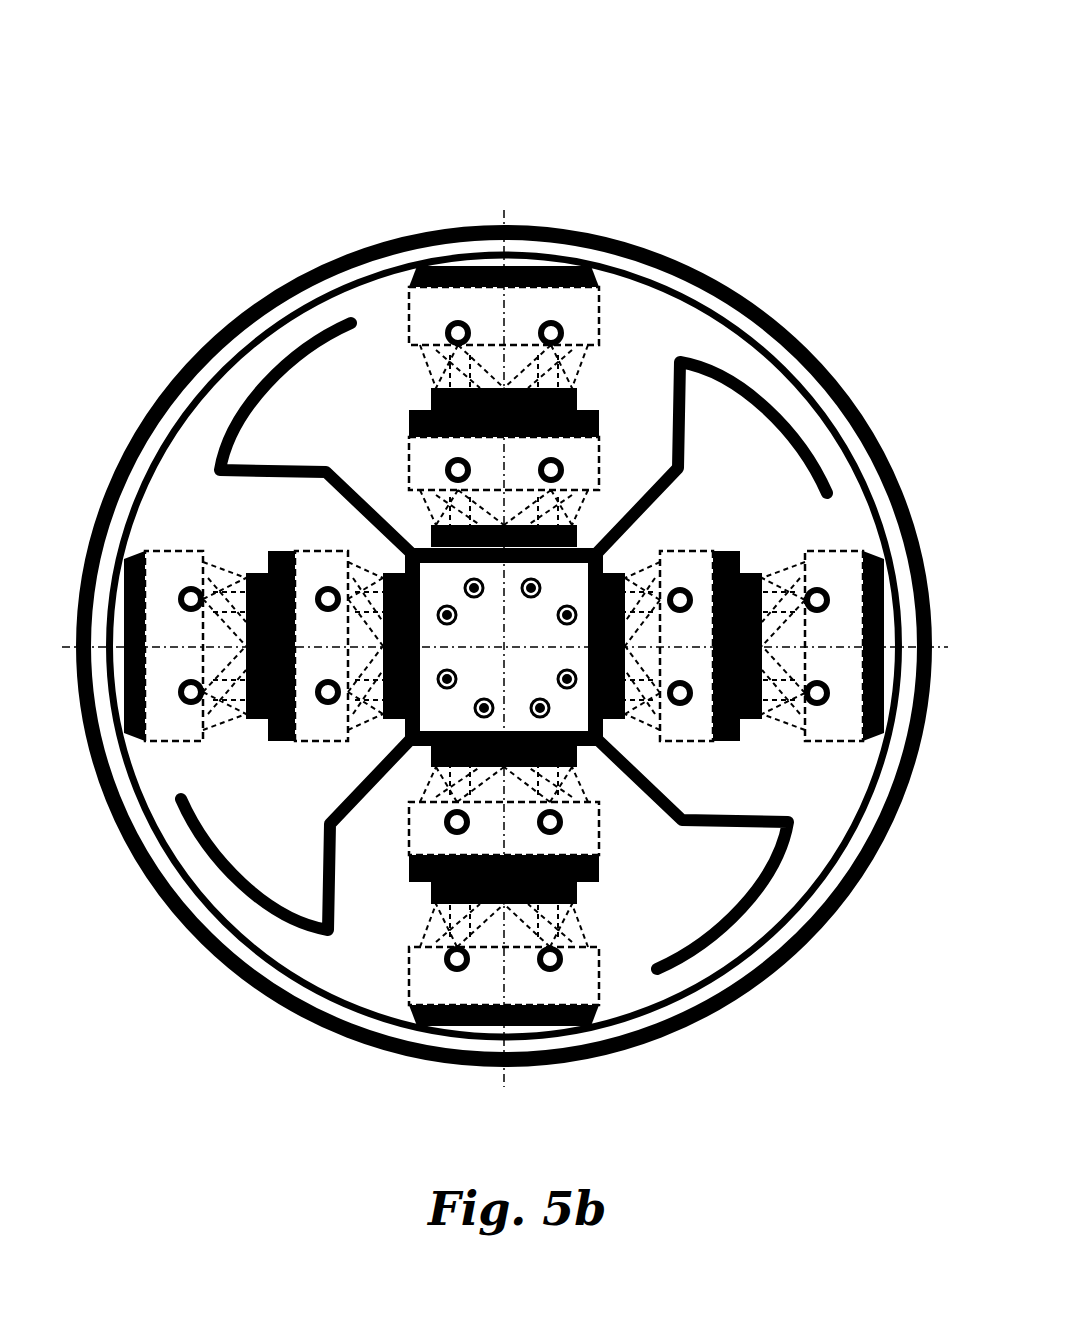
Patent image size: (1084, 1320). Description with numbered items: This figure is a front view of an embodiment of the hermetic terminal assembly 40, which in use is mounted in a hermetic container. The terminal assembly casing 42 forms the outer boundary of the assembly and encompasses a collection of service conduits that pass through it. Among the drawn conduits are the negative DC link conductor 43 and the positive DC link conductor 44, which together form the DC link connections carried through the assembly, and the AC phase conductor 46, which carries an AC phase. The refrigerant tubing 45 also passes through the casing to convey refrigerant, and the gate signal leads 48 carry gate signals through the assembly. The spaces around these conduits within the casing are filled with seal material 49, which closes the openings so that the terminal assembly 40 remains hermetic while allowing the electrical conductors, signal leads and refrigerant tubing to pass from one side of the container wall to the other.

The hermetic terminal assembly 40 is at (338, 141).
The terminal assembly casing 42 is at (527, 225).
The negative DC link conductor 43 is at (615, 268).
The positive DC link conductor 44 is at (740, 372).
The refrigerant tubing 45 is at (450, 326).
The AC phase conductor 46 is at (433, 422).
The gate signal leads 48 is at (465, 583).
The seal material 49 is at (754, 509).